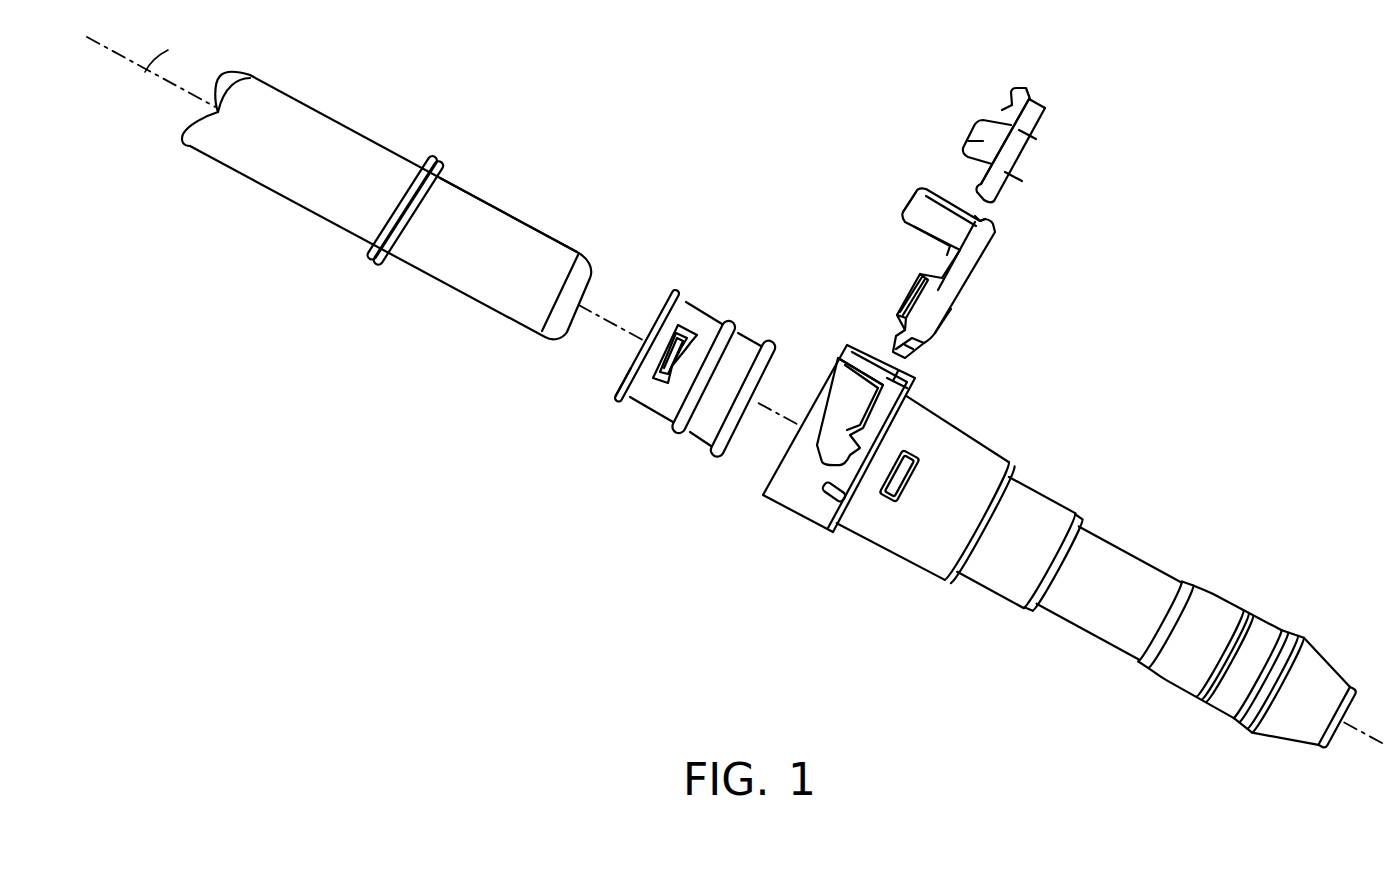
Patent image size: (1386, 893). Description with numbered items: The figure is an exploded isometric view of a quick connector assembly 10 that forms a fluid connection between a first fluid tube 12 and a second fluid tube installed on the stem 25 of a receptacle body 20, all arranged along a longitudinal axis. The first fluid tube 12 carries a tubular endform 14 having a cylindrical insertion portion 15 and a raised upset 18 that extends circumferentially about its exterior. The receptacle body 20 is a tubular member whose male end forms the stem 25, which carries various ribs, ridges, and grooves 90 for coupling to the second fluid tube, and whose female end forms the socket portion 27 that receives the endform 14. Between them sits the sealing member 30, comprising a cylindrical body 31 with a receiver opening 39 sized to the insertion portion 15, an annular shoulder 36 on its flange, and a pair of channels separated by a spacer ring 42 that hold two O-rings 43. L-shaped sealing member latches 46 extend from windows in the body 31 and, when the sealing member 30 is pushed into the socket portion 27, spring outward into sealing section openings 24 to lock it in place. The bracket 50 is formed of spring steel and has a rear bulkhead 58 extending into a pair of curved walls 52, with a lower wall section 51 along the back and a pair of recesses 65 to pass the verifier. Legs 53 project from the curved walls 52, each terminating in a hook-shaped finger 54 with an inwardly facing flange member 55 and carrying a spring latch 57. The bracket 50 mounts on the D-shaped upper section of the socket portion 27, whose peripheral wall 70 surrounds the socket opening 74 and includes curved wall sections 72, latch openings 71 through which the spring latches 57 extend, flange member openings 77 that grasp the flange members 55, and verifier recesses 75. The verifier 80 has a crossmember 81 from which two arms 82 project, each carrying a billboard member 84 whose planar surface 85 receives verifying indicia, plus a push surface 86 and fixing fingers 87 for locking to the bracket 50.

The quick connector assembly 10 is at (765, 122).
The first fluid tube 12 is at (262, 190).
The endform 14 is at (386, 234).
The cylindrical insertion portion 15 is at (491, 203).
The raised upset 18 is at (429, 165).
The receptacle body 20 is at (1017, 539).
The sealing section opening 24 is at (893, 500).
The stem 25 is at (1229, 653).
The socket portion 27 is at (867, 447).
The sealing member 30 is at (671, 378).
The cylindrical body 31 is at (704, 302).
The annular shoulder 36 is at (678, 290).
The receiver opening 39 is at (615, 395).
The spacer ring 42 is at (698, 455).
The O-ring 43 is at (735, 320).
The sealing member latch 46 is at (656, 392).
The bracket 50 is at (953, 266).
The lower wall section 51 is at (995, 230).
The curved wall 52 is at (975, 250).
The leg 53 is at (957, 320).
The hook-shaped finger 54 is at (928, 346).
The flange member 55 is at (898, 325).
The spring latch 57 is at (896, 282).
The rear bulkhead 58 is at (935, 192).
The recess 65 is at (981, 219).
The peripheral wall 70 is at (773, 500).
The latch opening 71 is at (858, 395).
The curved wall section 72 is at (908, 381).
The socket opening 74 is at (808, 386).
The verifier recess 75 is at (913, 373).
The flange member opening 77 is at (830, 505).
The verifier 80 is at (1015, 112).
The crossmember 81 is at (1045, 100).
The arm 82 is at (1015, 170).
The billboard member 84 is at (985, 118).
The planar surface 85 is at (988, 143).
The push surface 86 is at (1018, 88).
The fixing finger 87 is at (1000, 105).
The ribs, ridges, and grooves 90 is at (1248, 610).